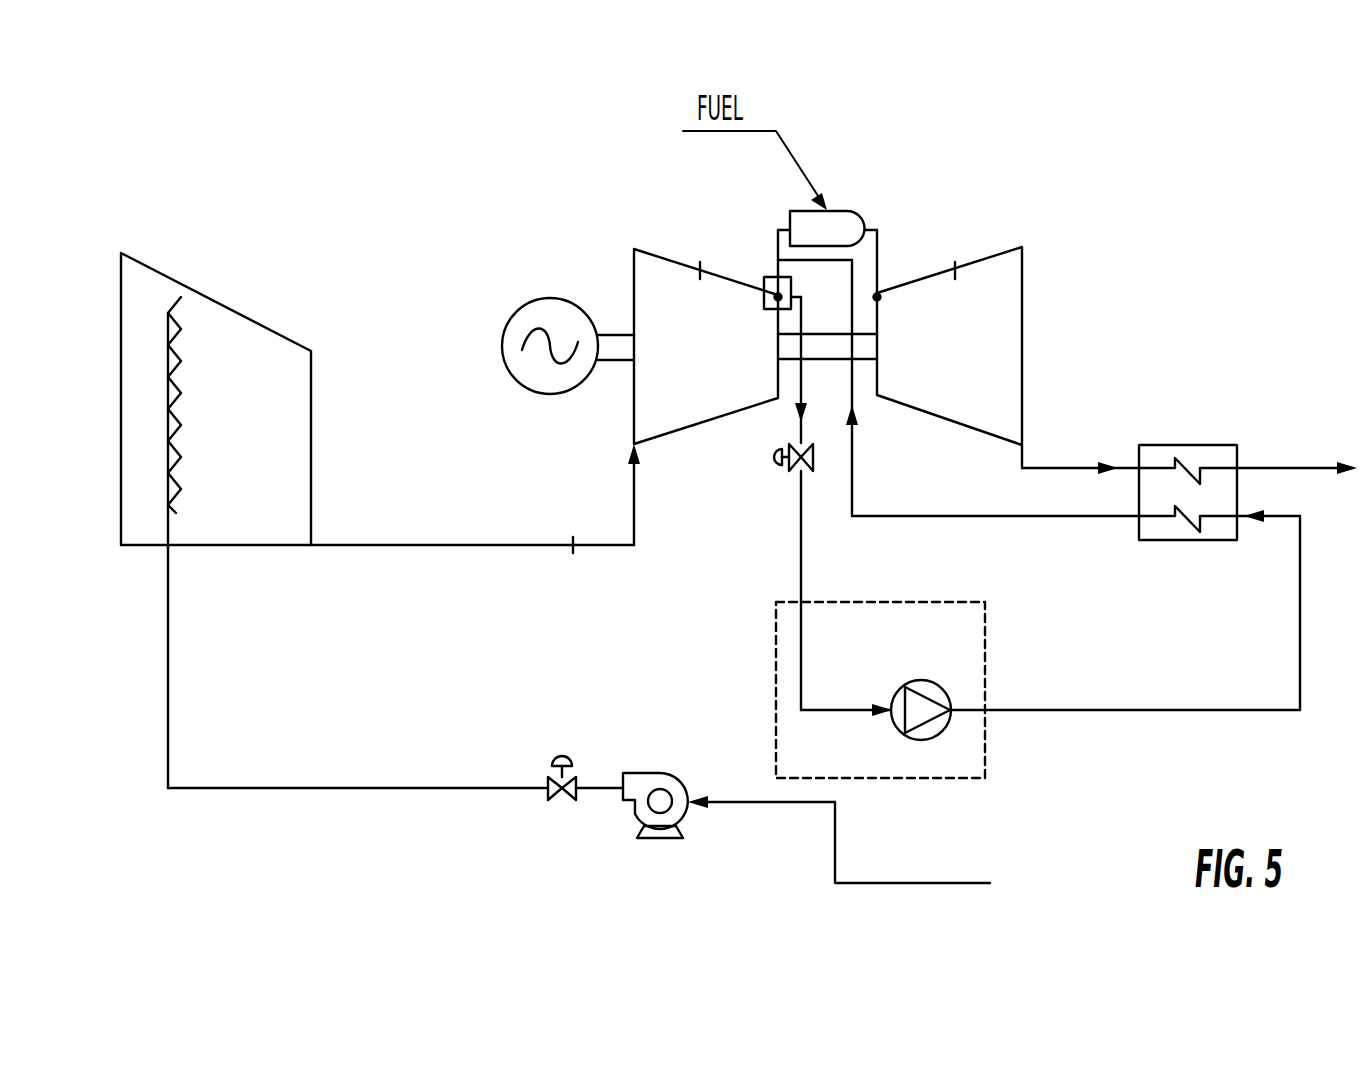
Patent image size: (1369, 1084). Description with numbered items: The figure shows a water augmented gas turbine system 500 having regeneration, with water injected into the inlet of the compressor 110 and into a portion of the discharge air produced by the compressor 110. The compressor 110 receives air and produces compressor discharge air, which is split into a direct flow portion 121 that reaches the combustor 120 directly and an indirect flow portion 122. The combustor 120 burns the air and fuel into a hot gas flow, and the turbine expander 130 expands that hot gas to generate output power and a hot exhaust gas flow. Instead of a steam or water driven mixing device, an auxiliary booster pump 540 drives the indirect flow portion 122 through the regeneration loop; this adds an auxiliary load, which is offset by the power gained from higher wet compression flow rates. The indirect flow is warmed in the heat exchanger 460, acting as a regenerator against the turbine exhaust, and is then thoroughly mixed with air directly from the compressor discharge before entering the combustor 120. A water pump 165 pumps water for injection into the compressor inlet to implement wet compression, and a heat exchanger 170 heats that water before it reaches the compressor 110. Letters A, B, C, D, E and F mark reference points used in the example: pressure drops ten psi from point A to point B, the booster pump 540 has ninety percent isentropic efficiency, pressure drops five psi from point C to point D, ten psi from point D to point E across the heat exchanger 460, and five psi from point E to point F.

The water augmented gas turbine system 500 is at (1182, 257).
The heat exchanger 170 is at (121, 472).
The compressor 110 is at (647, 262).
The combustor 120 is at (829, 209).
The direct flow portion 121 is at (777, 258).
The indirect flow portion 122 is at (797, 385).
The turbine expander 130 is at (998, 297).
The heat exchanger 460 is at (1167, 444).
The auxiliary booster pump 540 is at (884, 707).
The water pump 165 is at (632, 806).
The point A is at (803, 308).
The point B is at (801, 645).
The point C is at (968, 708).
The point D is at (1300, 530).
The point E is at (1105, 518).
The point F is at (763, 275).